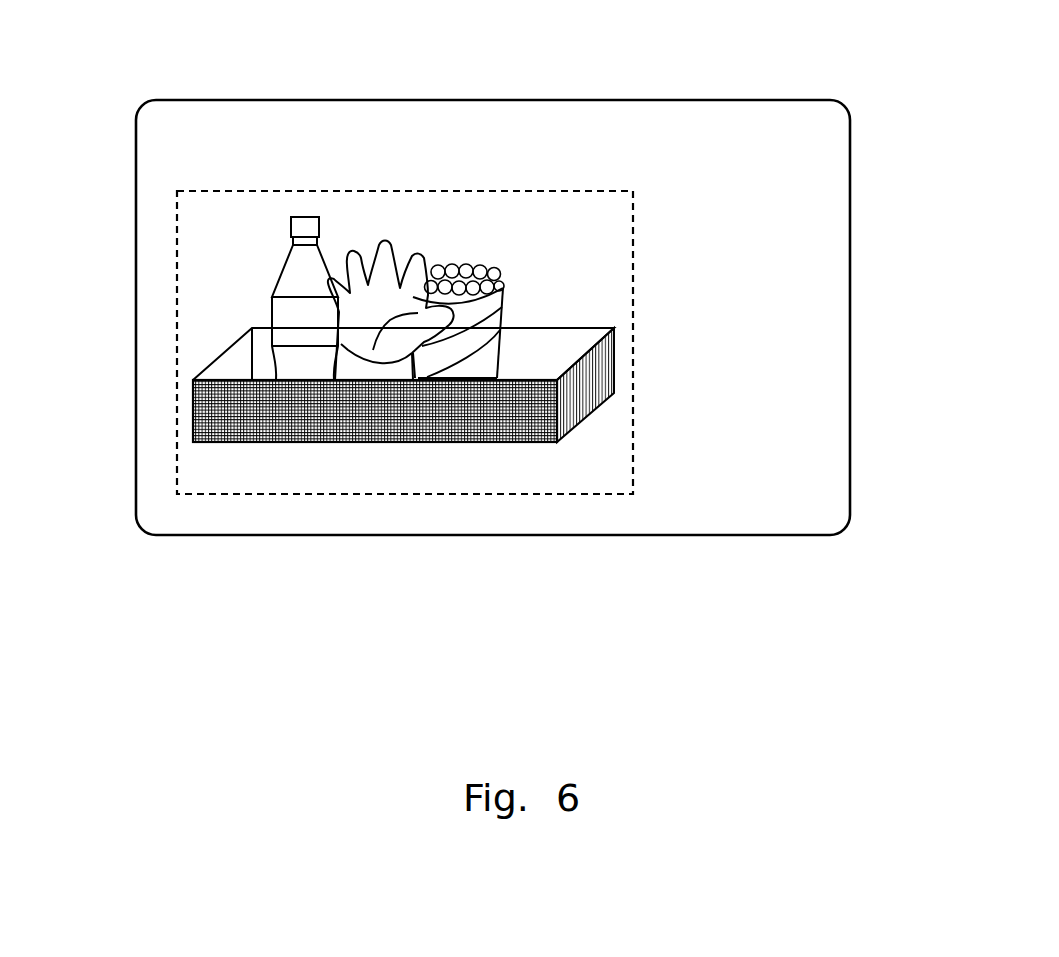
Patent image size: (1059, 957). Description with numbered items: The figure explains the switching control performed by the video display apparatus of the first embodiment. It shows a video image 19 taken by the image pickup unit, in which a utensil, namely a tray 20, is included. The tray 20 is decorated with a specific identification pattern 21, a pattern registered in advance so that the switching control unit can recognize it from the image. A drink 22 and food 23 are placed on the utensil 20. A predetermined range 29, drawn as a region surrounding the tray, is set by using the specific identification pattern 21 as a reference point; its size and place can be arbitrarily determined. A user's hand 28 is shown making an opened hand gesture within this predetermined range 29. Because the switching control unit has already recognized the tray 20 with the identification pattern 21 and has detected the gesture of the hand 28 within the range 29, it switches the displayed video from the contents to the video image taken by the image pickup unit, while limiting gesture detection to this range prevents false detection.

The video image 19 is at (777, 100).
The utensil (tray) 20 is at (227, 354).
The identification pattern 21 is at (205, 417).
The drink 22 is at (282, 258).
The food 23 is at (461, 268).
The user's hand 28 is at (392, 350).
The predetermined range 29 is at (252, 495).